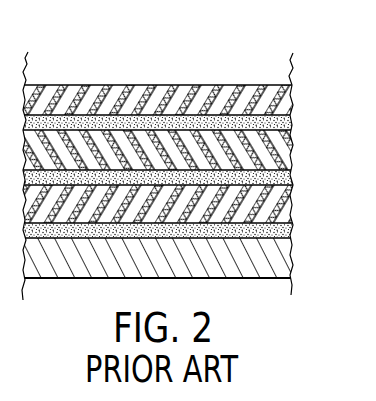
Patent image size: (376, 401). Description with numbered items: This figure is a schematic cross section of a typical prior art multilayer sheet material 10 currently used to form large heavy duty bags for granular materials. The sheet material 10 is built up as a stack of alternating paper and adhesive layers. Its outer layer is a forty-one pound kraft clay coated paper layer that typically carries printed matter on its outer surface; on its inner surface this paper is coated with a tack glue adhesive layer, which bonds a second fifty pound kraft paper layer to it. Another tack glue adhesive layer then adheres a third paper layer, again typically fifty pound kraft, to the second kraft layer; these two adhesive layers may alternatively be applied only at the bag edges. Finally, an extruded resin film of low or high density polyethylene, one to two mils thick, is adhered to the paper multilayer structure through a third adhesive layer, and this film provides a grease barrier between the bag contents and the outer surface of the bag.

The sheet material 10 is at (146, 49).